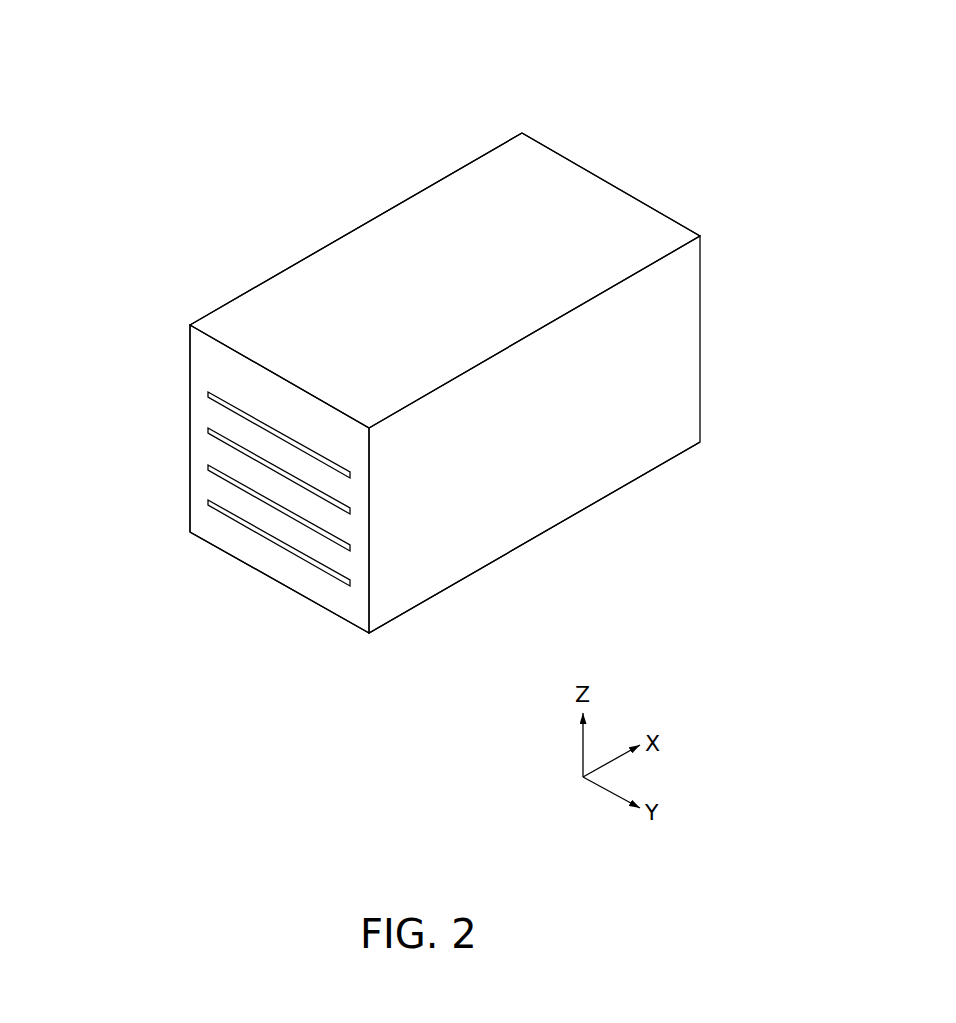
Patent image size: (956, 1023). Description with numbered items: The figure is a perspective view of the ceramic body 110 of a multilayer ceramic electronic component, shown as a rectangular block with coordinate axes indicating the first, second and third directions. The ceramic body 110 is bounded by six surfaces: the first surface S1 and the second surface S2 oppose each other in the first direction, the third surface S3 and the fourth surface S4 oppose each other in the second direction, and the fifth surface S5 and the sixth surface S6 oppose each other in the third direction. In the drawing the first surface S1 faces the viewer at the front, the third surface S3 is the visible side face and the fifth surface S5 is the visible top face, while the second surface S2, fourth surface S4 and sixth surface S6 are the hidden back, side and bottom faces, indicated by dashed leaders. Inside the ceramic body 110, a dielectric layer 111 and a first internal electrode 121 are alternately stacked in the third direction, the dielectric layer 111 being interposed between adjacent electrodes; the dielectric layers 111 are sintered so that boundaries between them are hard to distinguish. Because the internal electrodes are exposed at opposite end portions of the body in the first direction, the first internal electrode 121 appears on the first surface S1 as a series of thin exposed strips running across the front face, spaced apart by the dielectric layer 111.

The ceramic body 110 is at (204, 46).
The dielectric layer 111 is at (197, 466).
The first internal electrode 121 is at (223, 402).
The first surface S1 is at (275, 501).
The second surface S2 is at (612, 230).
The third surface S3 is at (658, 368).
The fourth surface S4 is at (307, 302).
The fifth surface S5 is at (451, 223).
The sixth surface S6 is at (495, 510).